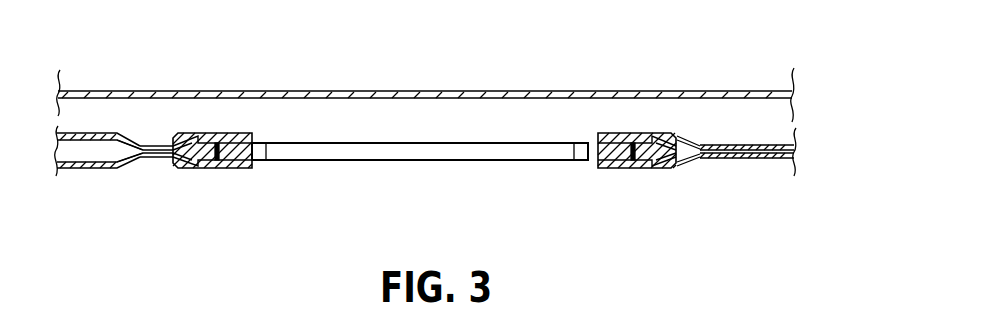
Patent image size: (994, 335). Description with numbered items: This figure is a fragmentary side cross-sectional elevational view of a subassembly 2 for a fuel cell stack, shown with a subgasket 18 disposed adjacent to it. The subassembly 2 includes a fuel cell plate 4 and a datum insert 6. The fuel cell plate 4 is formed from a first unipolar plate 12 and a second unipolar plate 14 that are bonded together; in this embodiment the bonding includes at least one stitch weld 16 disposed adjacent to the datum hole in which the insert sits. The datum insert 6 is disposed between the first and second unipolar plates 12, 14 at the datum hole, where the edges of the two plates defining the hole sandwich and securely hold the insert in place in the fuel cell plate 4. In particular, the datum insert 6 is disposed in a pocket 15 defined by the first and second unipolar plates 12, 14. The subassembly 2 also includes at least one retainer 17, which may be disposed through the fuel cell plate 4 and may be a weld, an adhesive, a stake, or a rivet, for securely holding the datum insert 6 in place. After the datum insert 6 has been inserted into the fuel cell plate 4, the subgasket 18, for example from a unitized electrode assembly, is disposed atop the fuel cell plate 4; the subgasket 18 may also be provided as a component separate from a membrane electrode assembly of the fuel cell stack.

The subassembly 2 is at (790, 20).
The fuel cell plate 4 is at (808, 146).
The datum insert 6 is at (257, 166).
The first unipolar plate 12 is at (764, 143).
The second unipolar plate 14 is at (756, 159).
The pocket 15 is at (194, 134).
The stitch weld 16 is at (150, 146).
The retainer 17 is at (216, 160).
The subgasket 18 is at (172, 91).